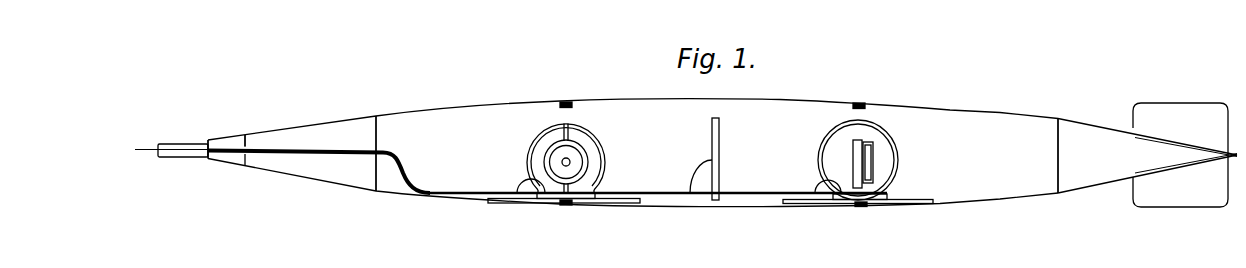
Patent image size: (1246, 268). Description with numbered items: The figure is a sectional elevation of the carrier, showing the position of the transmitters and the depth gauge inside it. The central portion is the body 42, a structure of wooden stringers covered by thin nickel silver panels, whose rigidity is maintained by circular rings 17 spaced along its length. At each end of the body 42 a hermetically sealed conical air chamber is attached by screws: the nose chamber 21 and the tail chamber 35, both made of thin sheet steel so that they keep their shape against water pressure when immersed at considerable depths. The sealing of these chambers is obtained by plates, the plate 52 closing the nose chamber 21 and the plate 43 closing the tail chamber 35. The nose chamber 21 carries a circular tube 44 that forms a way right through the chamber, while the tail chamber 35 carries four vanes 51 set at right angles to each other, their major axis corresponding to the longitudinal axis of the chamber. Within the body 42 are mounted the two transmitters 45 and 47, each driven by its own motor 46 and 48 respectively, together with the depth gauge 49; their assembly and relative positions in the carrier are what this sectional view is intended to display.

The circular rings 17 is at (563, 102).
The conical air chamber 21 is at (267, 142).
The conical air chamber 35 is at (1075, 135).
The body 42 is at (596, 153).
The sealing plate 43 is at (1057, 137).
The circular tube 44 is at (307, 146).
The transmitter 45 is at (553, 157).
The motor 46 is at (580, 199).
The transmitter 47 is at (875, 157).
The motor 48 is at (878, 196).
The depth gauge 49 is at (712, 133).
The vanes 51 is at (1173, 112).
The sealing plate 52 is at (377, 130).